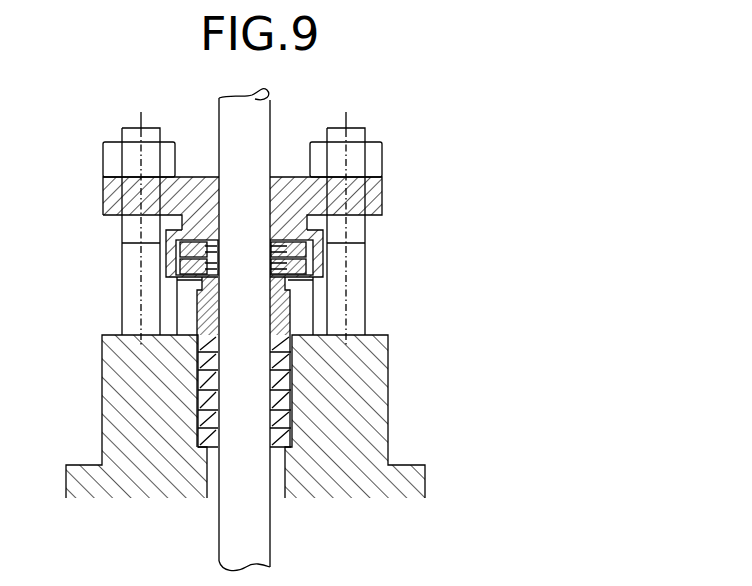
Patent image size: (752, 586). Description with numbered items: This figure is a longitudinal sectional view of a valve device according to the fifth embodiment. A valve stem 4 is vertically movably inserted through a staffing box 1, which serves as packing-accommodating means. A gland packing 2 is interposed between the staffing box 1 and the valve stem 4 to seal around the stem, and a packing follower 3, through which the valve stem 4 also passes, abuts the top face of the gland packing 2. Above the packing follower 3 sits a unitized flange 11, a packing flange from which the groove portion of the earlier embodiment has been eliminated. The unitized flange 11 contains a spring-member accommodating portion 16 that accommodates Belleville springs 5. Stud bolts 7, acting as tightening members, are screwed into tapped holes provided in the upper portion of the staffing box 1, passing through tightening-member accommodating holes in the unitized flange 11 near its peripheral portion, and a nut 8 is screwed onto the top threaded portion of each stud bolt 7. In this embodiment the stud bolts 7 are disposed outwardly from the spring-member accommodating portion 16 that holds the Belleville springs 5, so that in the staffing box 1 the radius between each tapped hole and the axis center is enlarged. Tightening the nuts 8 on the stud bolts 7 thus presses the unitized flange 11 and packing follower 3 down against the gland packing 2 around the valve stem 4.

The staffing box 1 is at (388, 385).
The gland packing 2 is at (203, 441).
The packing follower 3 is at (290, 305).
The valve stem 4 is at (272, 107).
The Belleville springs 5 is at (177, 287).
The stud bolt 7 is at (365, 262).
The nut 8 is at (375, 155).
The unitized flange 11 is at (382, 197).
The spring-member accommodating portion 16 is at (168, 262).